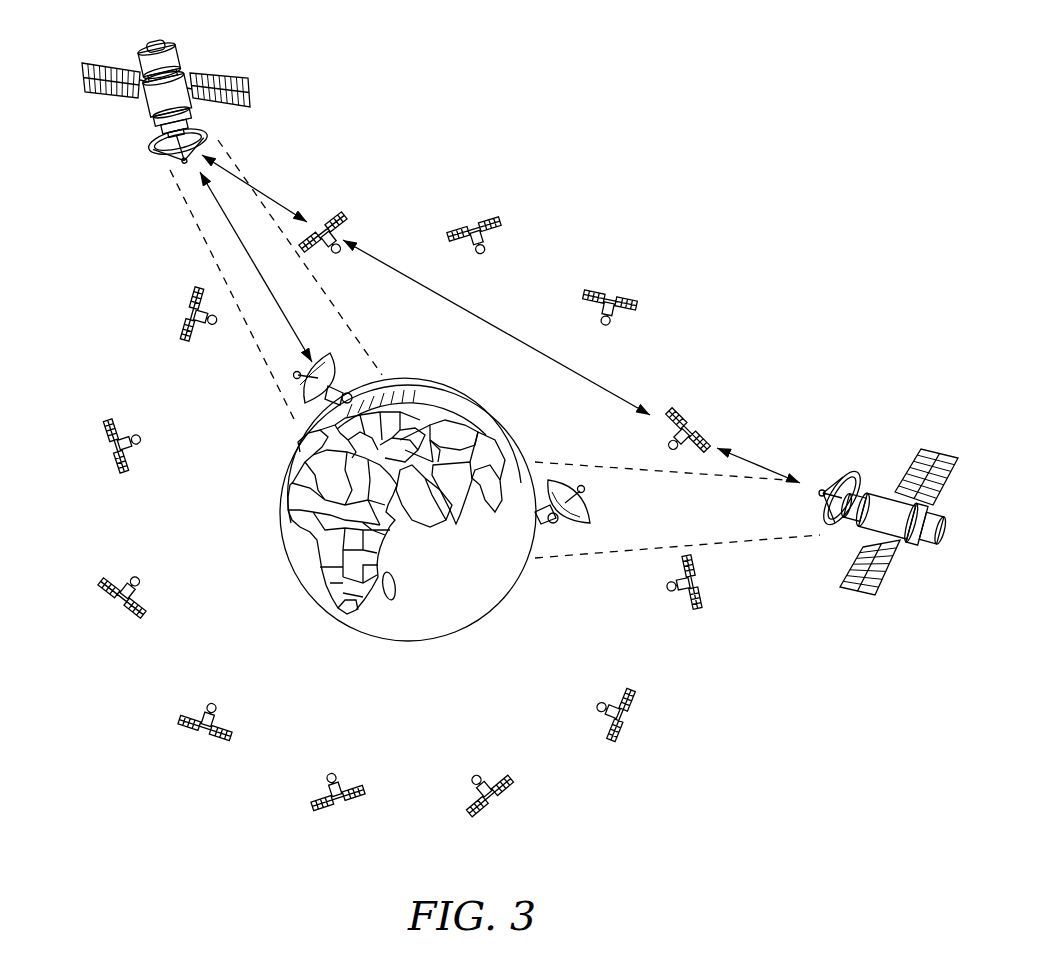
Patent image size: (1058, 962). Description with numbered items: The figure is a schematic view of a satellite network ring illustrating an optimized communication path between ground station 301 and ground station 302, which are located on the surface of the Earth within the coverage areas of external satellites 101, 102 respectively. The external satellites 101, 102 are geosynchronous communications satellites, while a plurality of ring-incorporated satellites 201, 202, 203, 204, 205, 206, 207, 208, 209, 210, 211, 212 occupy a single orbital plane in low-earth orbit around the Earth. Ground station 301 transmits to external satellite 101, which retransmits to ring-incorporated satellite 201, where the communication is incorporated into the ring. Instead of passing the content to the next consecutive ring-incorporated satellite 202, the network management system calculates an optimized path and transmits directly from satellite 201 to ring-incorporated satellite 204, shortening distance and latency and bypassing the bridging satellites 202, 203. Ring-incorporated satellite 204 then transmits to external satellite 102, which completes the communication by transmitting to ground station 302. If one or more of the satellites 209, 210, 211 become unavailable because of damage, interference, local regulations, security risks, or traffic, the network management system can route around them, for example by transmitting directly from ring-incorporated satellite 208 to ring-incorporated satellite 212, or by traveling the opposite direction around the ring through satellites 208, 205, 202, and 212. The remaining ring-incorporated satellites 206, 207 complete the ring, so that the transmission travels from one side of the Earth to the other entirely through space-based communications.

The external satellite 101 is at (160, 45).
The external satellite 102 is at (897, 503).
The ring-incorporated satellite 201 is at (333, 213).
The ring-incorporated satellite 202 is at (493, 217).
The ring-incorporated satellite 203 is at (607, 295).
The ring-incorporated satellite 204 is at (690, 423).
The ring-incorporated satellite 205 is at (683, 590).
The ring-incorporated satellite 206 is at (623, 712).
The ring-incorporated satellite 207 is at (497, 803).
The ring-incorporated satellite 208 is at (340, 803).
The ring-incorporated satellite 209 is at (202, 735).
The ring-incorporated satellite 210 is at (122, 605).
The ring-incorporated satellite 211 is at (112, 450).
The ring-incorporated satellite 212 is at (188, 312).
The ground station 301 is at (327, 357).
The ground station 302 is at (583, 503).